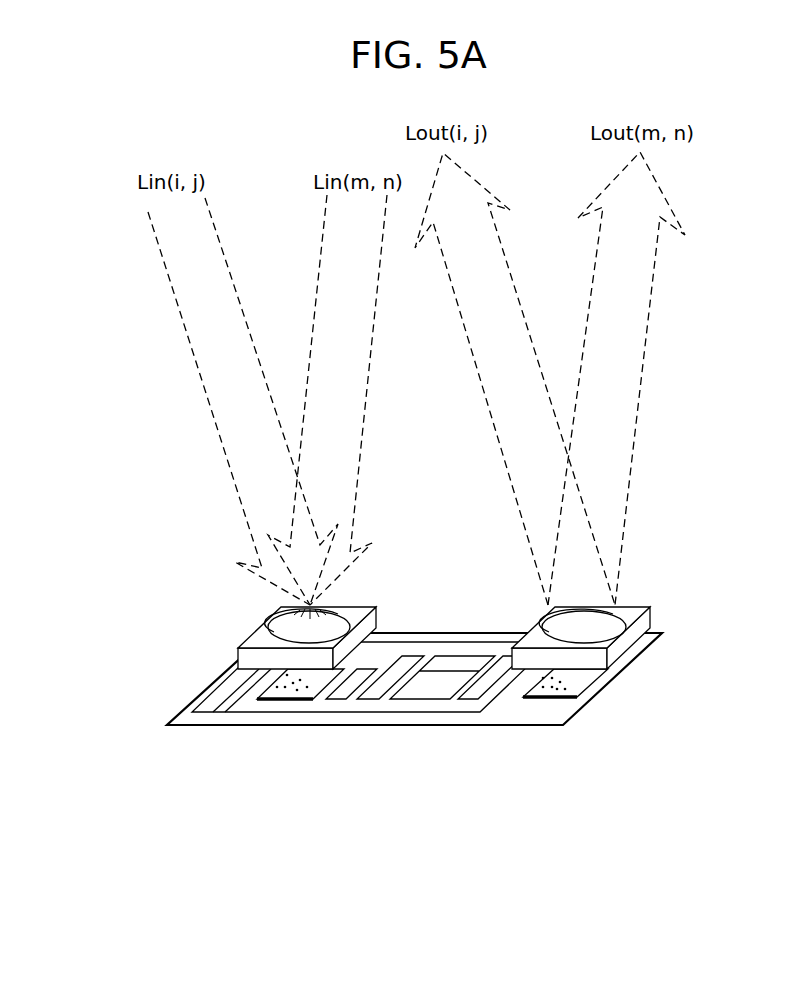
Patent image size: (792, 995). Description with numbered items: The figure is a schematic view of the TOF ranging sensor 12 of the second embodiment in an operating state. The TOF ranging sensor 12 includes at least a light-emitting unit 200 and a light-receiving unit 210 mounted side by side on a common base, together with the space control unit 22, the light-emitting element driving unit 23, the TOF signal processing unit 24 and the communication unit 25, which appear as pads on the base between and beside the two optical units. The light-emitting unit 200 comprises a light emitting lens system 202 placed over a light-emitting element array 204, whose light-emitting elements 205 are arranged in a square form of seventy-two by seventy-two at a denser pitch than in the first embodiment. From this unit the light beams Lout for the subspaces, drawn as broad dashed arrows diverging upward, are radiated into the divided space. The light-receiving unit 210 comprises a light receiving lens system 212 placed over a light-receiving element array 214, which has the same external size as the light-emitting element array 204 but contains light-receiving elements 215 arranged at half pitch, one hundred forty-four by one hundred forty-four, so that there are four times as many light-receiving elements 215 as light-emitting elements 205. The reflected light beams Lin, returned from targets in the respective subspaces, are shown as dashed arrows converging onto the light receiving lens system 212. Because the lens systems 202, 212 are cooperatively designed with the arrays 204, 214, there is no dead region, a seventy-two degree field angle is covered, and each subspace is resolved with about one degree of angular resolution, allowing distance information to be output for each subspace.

The TOF ranging sensor 12 is at (657, 543).
The light-emitting unit 200 is at (720, 635).
The light emitting lens system 202 is at (642, 638).
The light-emitting element array 204 is at (583, 678).
The light-emitting element 205 is at (565, 698).
The light-receiving unit 210 is at (155, 608).
The light receiving lens system 212 is at (287, 633).
The light-receiving element array 214 is at (307, 671).
The light-receiving element 215 is at (243, 682).
The communication unit 25 is at (213, 698).
The space control unit 22 is at (452, 681).
The light-emitting element driving unit 23 is at (495, 670).
The TOF signal processing unit 24 is at (403, 667).